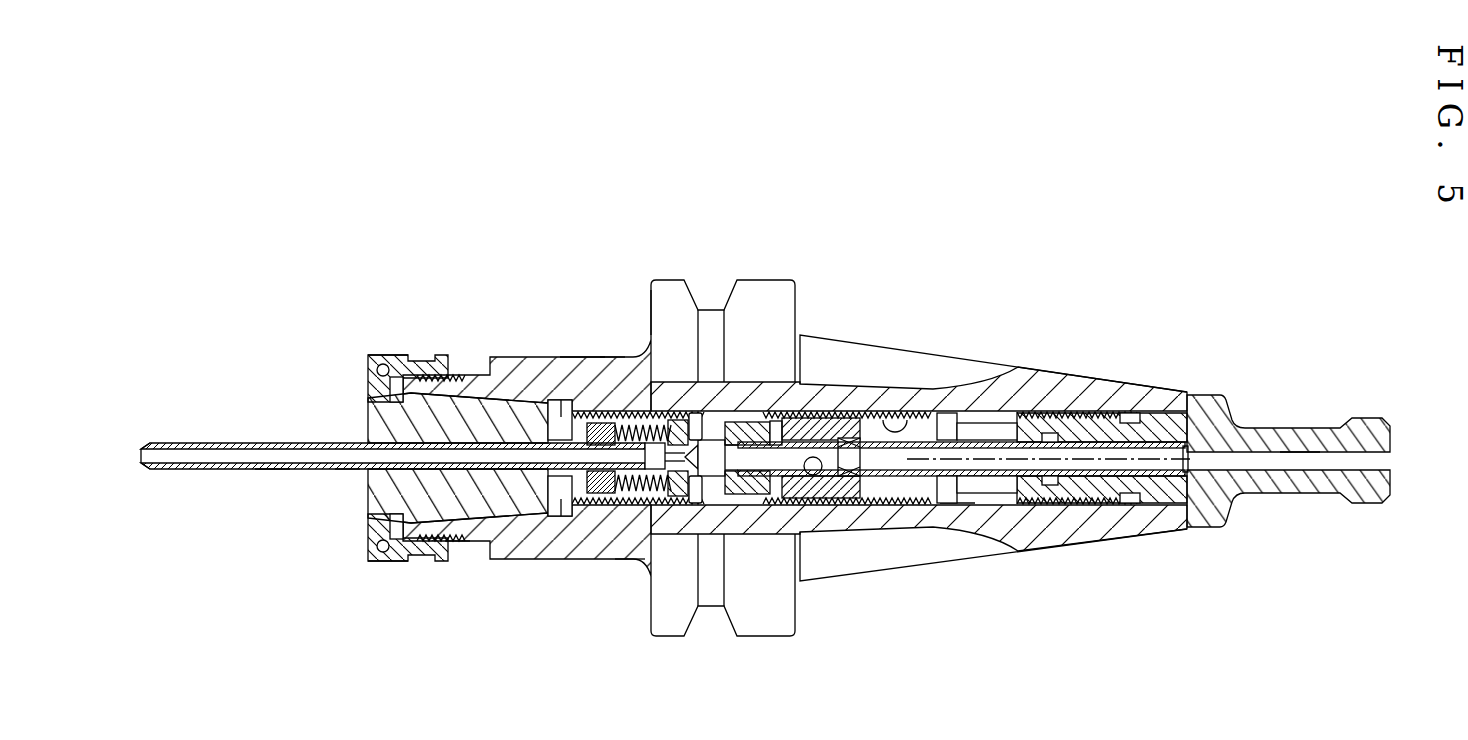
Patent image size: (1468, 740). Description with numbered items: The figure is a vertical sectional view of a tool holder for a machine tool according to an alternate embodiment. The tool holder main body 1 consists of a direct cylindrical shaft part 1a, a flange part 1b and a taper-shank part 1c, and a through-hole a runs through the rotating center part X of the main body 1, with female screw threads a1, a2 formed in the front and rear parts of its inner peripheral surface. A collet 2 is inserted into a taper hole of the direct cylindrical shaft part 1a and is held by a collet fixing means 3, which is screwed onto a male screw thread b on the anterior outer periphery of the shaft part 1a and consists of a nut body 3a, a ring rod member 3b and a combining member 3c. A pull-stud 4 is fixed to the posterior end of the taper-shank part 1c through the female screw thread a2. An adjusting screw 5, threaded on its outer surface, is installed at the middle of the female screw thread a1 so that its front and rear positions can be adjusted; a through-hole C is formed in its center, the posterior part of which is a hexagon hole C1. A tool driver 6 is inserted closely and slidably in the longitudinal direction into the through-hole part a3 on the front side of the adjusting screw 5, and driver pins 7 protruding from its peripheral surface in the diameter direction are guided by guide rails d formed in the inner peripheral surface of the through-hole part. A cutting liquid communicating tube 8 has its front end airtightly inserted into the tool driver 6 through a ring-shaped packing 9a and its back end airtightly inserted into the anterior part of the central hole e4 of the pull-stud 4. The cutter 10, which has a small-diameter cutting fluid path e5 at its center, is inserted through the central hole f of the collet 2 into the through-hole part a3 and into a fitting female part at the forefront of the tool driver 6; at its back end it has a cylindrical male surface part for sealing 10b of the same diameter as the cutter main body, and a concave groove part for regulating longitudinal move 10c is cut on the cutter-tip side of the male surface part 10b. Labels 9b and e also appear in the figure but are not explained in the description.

The tool holder main body 1 is at (781, 238).
The direct cylindrical shaft part 1a is at (578, 350).
The flange part 1b is at (778, 638).
The taper-shank part 1c is at (1047, 392).
The collet 2 is at (523, 490).
The collet fixing means 3 is at (417, 336).
The nut body 3a is at (402, 562).
The ring rod member 3b is at (380, 353).
The combining member 3c is at (368, 383).
The pull-stud 4 is at (1286, 435).
The adjusting screw 5 is at (840, 383).
The tool driver 6 is at (748, 490).
The driver pins 7 is at (700, 410).
The cutting liquid communicating tube 8 is at (922, 470).
The ring-shaped packing 9a is at (764, 420).
The seal ring 9b is at (1062, 482).
The cutter 10 is at (227, 440).
The cylindrical male surface part for sealing 10b is at (633, 560).
The groove part for regulating longitudinal move 10c is at (612, 350).
The through-hole a is at (990, 425).
The female screw thread a1 is at (903, 420).
The female screw thread a2 is at (1000, 483).
The through-hole part a3 is at (533, 357).
The male screw thread b is at (458, 545).
The through-hole C is at (811, 465).
The hexagon hole C1 is at (870, 500).
The guide rails d is at (634, 350).
The flange e is at (675, 380).
The central hole e4 is at (1300, 465).
The cutting fluid path e5 is at (270, 470).
The central hole f is at (347, 472).
The rotating center part X is at (955, 500).